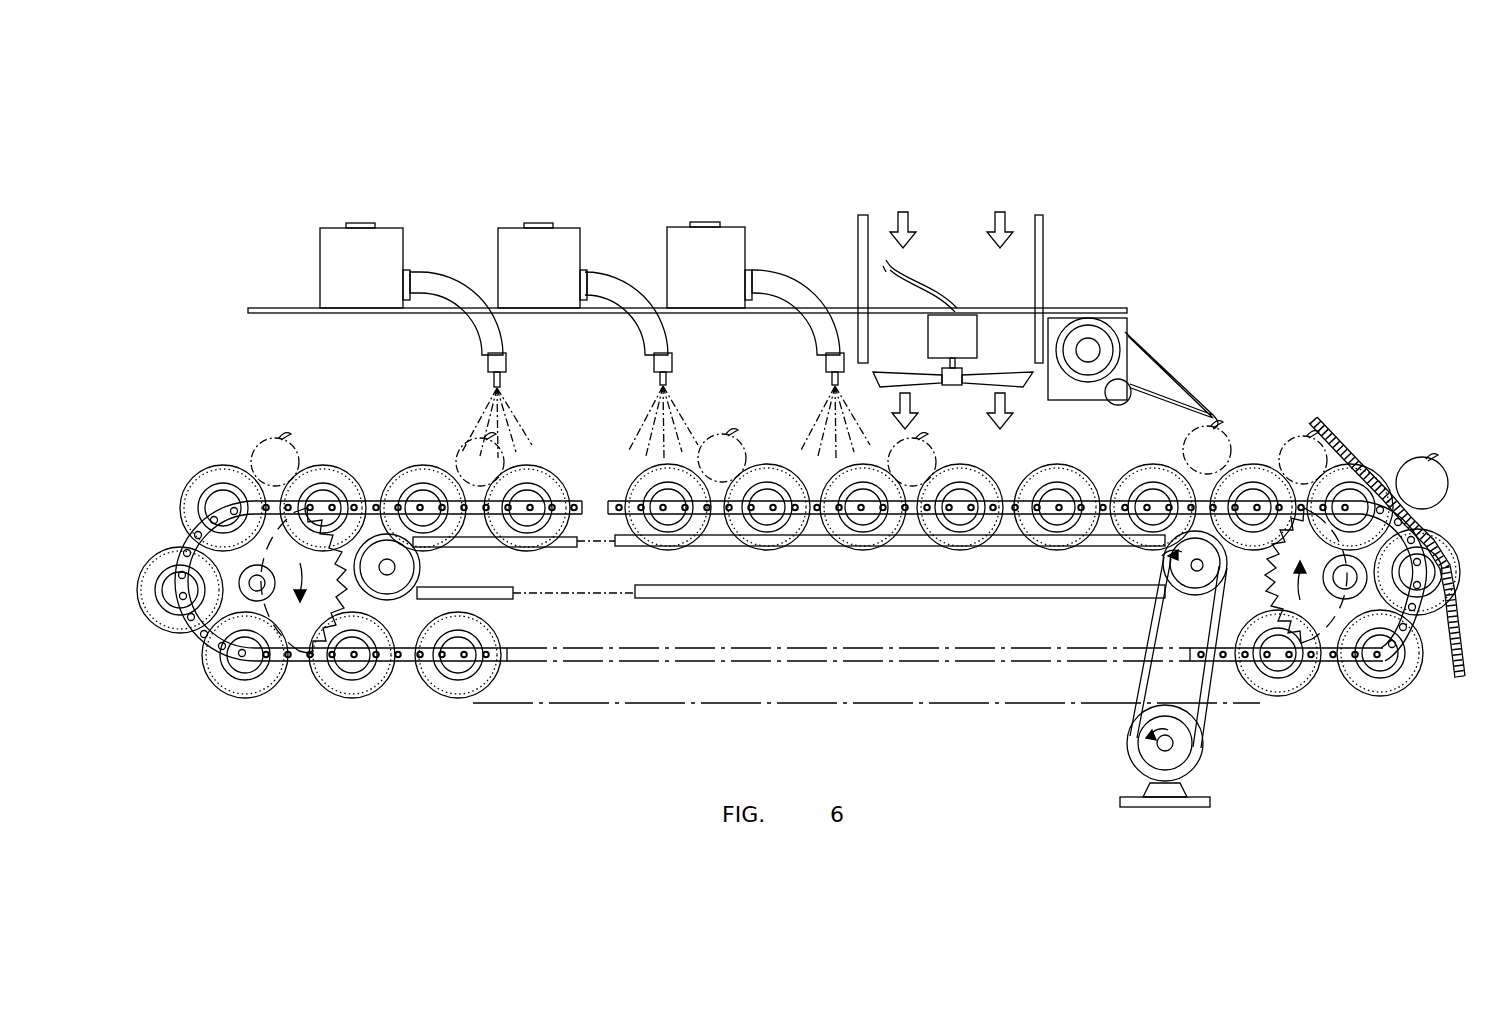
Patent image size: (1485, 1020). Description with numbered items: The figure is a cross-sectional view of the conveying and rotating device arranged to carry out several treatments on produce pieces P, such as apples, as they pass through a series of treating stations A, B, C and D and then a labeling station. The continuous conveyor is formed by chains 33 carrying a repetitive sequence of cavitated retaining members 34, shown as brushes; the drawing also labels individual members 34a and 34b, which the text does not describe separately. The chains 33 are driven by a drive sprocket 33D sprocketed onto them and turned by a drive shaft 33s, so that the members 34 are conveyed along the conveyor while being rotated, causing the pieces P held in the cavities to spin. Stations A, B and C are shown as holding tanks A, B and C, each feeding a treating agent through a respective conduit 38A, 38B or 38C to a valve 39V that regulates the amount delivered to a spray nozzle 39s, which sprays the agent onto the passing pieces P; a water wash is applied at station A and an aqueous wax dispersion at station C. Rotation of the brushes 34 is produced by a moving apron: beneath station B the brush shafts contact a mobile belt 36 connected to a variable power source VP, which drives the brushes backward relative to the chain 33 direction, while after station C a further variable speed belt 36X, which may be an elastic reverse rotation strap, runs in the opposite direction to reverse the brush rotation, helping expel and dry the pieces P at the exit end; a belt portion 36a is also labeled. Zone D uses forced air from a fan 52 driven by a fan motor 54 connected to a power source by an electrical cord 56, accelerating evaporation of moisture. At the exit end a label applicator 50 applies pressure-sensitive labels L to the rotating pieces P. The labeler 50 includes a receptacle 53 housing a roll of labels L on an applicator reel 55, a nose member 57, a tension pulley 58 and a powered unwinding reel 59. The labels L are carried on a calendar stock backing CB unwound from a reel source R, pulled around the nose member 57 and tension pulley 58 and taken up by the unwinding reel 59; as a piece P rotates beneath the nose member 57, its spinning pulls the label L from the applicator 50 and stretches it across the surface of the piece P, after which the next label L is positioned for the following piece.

The treatment station A is at (337, 212).
The treatment station B is at (508, 212).
The treatment station C is at (680, 212).
The treatment zone D is at (877, 210).
The reel source R is at (1088, 275).
The conduit 38A is at (446, 286).
The conduit 38B is at (614, 289).
The conduit 38C is at (793, 291).
The valve 39V is at (489, 359).
The spray nozzle 39s is at (500, 383).
The fan motor 54 is at (952, 336).
The fan 52 is at (1010, 373).
The electrical cord 56 is at (932, 292).
The applicator reel 55 is at (1080, 318).
The unwinding reel 59 is at (1092, 345).
The calendar stock backing CB is at (1121, 408).
The tension pulley 58 is at (1105, 402).
The receptacle 53 is at (1127, 330).
The label applicator 50 is at (1173, 358).
The pressure-sensitive label L is at (1232, 369).
The nose member 57 is at (1228, 430).
The produce piece P is at (262, 440).
The chain 33 is at (800, 567).
The drive shaft 33s is at (1270, 596).
The drive sprocket 33D is at (1330, 660).
The retaining member 34 is at (433, 460).
The brush roller 34a is at (392, 465).
The brush roller 34b is at (357, 452).
The variable speed belt 36X is at (632, 541).
The mobile belt 36 is at (553, 556).
The rail extension 36a is at (1140, 475).
The variable power source VP is at (1205, 745).